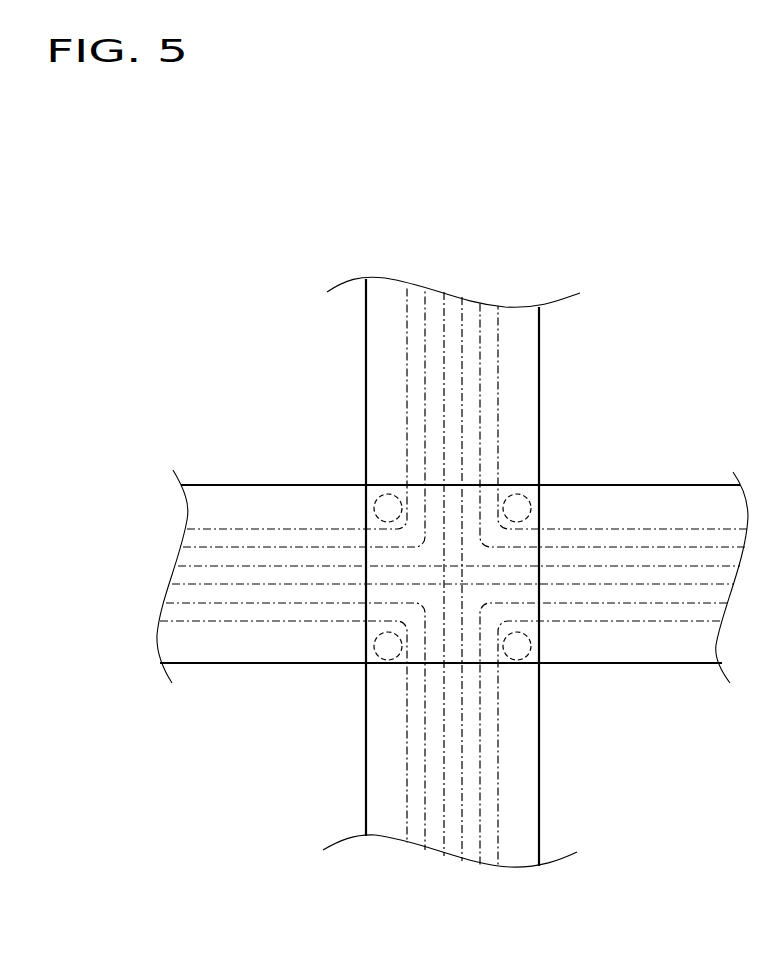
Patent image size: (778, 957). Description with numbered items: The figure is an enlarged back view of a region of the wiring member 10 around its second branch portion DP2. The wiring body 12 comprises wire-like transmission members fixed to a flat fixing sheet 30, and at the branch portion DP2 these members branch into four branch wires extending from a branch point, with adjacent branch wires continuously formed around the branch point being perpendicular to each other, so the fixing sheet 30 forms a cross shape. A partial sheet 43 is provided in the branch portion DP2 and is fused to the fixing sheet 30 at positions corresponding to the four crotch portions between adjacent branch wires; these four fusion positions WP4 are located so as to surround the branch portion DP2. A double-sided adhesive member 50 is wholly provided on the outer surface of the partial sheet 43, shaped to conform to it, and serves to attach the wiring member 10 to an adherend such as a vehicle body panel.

The wiring member 10 is at (211, 257).
The fixing sheet 30 is at (518, 347).
The wiring body 12 is at (490, 403).
The partial sheet 43 is at (452, 598).
The double-sided adhesive member 50 is at (462, 655).
The fusion positions WP4 is at (380, 497).
The branch portion DP2 is at (532, 521).